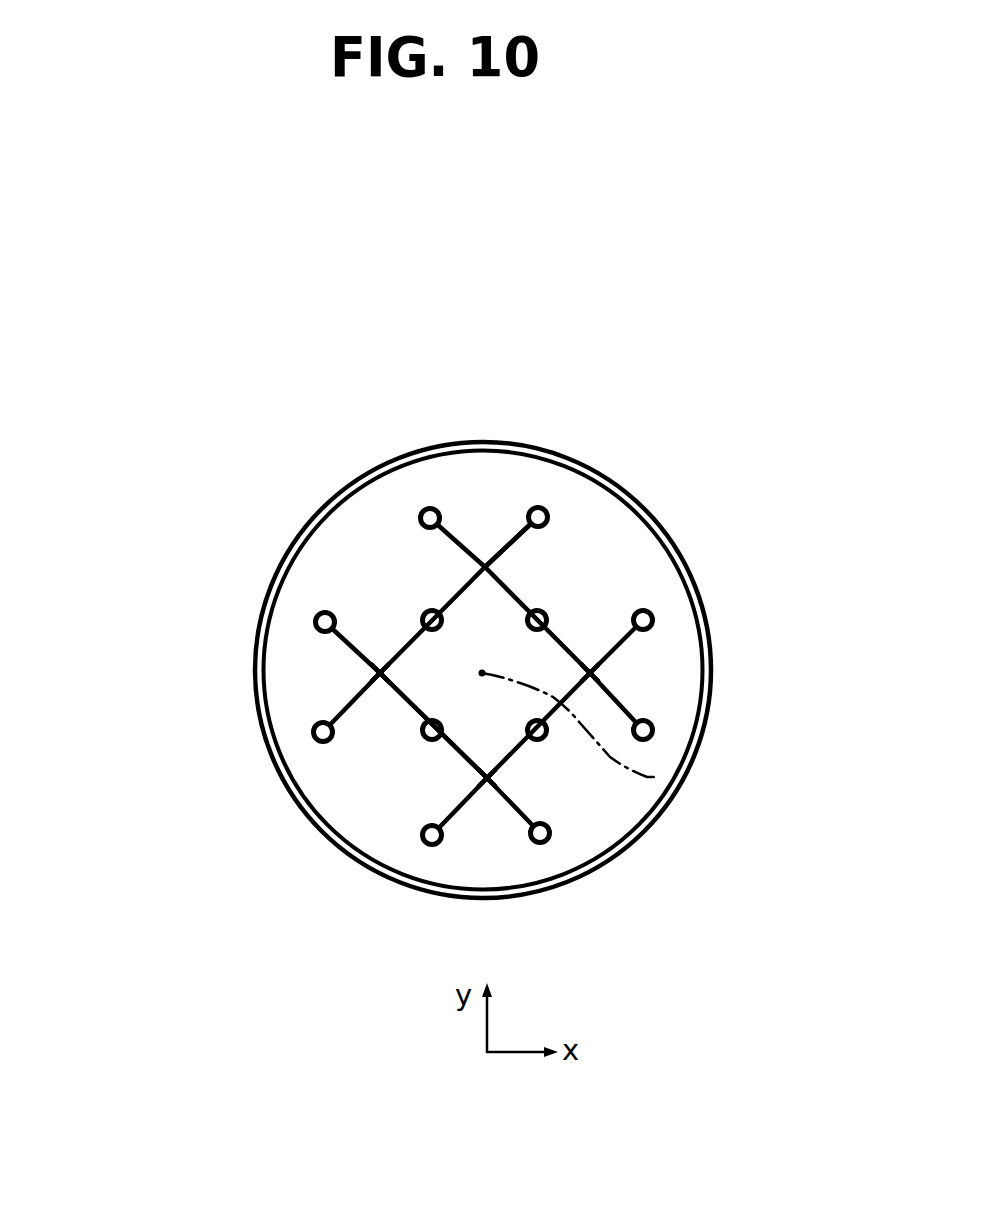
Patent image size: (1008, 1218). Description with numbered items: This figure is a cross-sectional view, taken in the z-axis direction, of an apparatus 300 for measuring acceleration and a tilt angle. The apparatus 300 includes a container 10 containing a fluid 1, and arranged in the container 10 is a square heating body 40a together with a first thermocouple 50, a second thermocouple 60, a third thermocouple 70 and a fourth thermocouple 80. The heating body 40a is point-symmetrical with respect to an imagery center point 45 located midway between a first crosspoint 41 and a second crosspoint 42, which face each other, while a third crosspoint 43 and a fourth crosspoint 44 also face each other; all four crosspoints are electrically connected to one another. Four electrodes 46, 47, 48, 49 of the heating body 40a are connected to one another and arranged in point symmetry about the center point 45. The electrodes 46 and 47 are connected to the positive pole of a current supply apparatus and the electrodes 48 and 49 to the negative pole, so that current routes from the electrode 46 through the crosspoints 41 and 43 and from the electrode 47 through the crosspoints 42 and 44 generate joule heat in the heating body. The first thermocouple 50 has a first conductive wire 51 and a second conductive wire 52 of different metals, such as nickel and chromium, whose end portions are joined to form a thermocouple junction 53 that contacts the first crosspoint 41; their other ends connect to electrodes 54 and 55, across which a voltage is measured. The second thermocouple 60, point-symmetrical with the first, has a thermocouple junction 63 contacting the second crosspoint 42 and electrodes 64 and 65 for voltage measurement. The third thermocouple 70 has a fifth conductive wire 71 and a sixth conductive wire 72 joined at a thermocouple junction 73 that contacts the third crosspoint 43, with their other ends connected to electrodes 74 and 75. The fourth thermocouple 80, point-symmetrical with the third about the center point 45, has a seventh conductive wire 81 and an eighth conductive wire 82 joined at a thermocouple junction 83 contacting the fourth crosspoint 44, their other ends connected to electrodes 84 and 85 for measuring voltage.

The apparatus for measuring acceleration and a tilt angle 300 is at (205, 438).
The fluid 1 is at (476, 505).
The container 10 is at (525, 448).
The heating body 40a is at (440, 757).
The first crosspoint 41 is at (513, 540).
The second crosspoint 42 is at (487, 790).
The third crosspoint 43 is at (373, 675).
The fourth crosspoint 44 is at (600, 674).
The imagery center point 45 is at (657, 777).
The electrode 46 is at (420, 608).
The electrode 47 is at (520, 737).
The electrode 48 is at (425, 745).
The electrode 49 is at (500, 568).
The first thermocouple 50 is at (510, 518).
The first conductive wire 51 is at (453, 548).
The second conductive wire 52 is at (548, 512).
The thermocouple junction 53 is at (511, 542).
The electrode 54 is at (428, 508).
The electrode 55 is at (590, 522).
The second thermocouple 60 is at (462, 820).
The thermocouple junction 63 is at (487, 778).
The electrode 64 is at (423, 847).
The electrode 65 is at (550, 833).
The third thermocouple 70 is at (352, 692).
The fifth conductive wire 71 is at (355, 640).
The sixth conductive wire 72 is at (315, 733).
The thermocouple junction 73 is at (380, 673).
The electrode 74 is at (313, 620).
The electrode 75 is at (340, 712).
The fourth thermocouple 80 is at (615, 690).
The seventh conductive wire 81 is at (560, 612).
The eighth conductive wire 82 is at (625, 720).
The thermocouple junction 83 is at (590, 673).
The electrode 84 is at (657, 620).
The electrode 85 is at (657, 735).